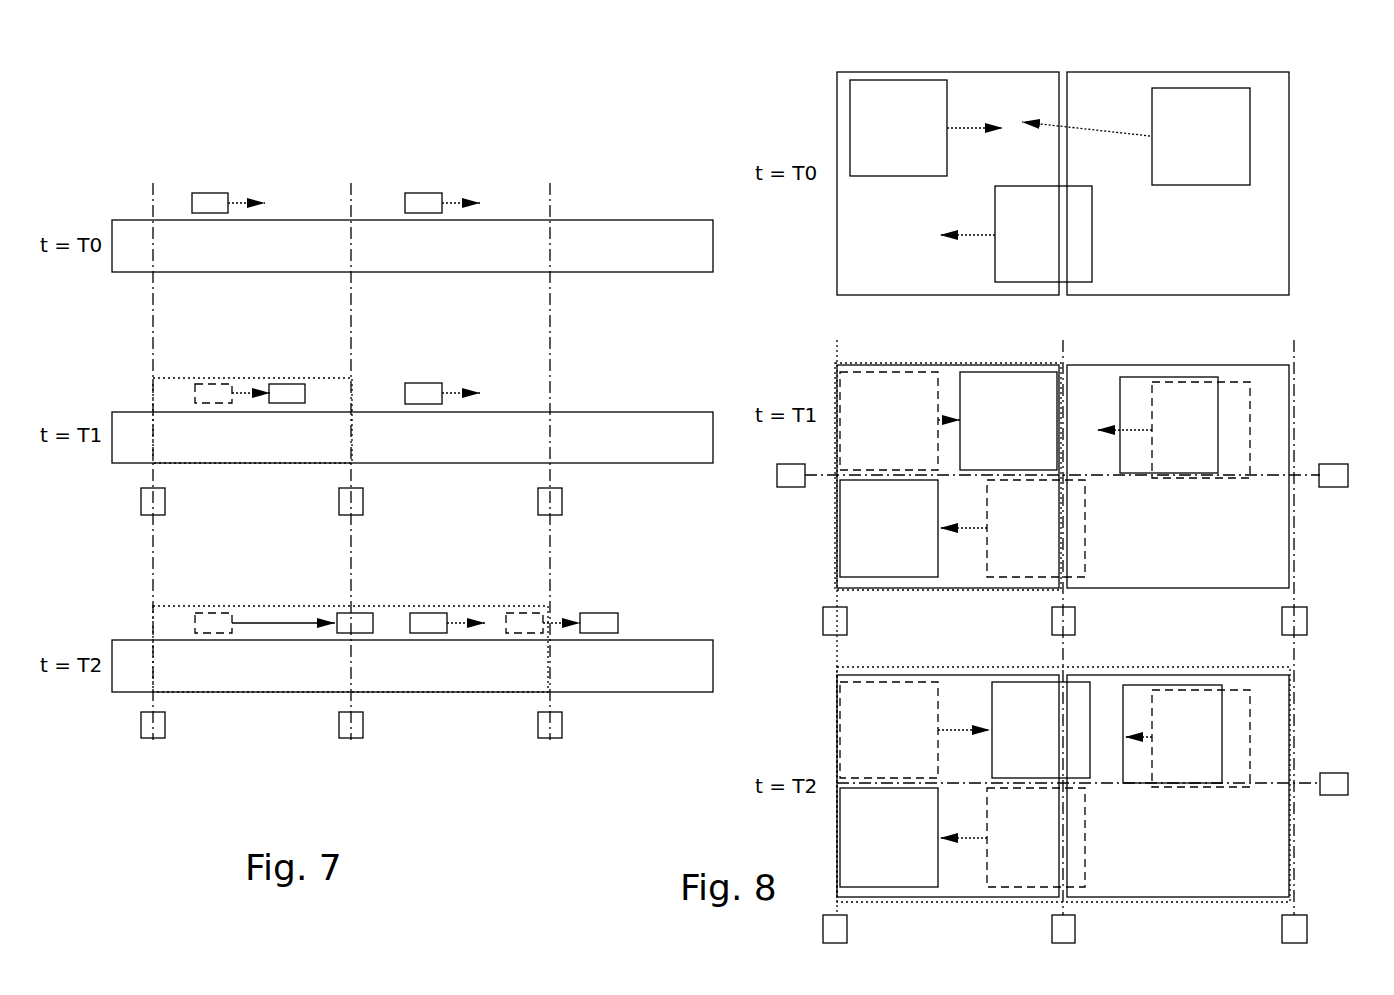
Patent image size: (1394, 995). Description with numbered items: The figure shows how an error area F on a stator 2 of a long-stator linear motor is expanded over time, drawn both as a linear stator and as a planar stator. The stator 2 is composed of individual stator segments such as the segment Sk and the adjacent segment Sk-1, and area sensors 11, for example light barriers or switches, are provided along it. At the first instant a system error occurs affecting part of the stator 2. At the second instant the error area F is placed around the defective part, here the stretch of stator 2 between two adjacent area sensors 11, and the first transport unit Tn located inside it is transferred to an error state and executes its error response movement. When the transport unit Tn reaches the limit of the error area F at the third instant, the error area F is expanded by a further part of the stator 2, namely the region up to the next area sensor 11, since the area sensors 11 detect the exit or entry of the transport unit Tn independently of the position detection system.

In FIG. 7, the stator 2 is at (498, 220).
In FIG. 7, the area sensor 11 is at (140, 500).
In FIG. 8, the area sensor 11 is at (792, 488).
In FIG. 7, the first transport unit Tn is at (210, 192).
In FIG. 8, the first transport unit Tn is at (850, 100).
In FIG. 7, the error area F is at (325, 378).
In FIG. 8, the error area F is at (895, 362).
In FIG. 7, the stator segment Sk is at (170, 410).
In FIG. 7, the stator segment Sk-1 is at (525, 435).